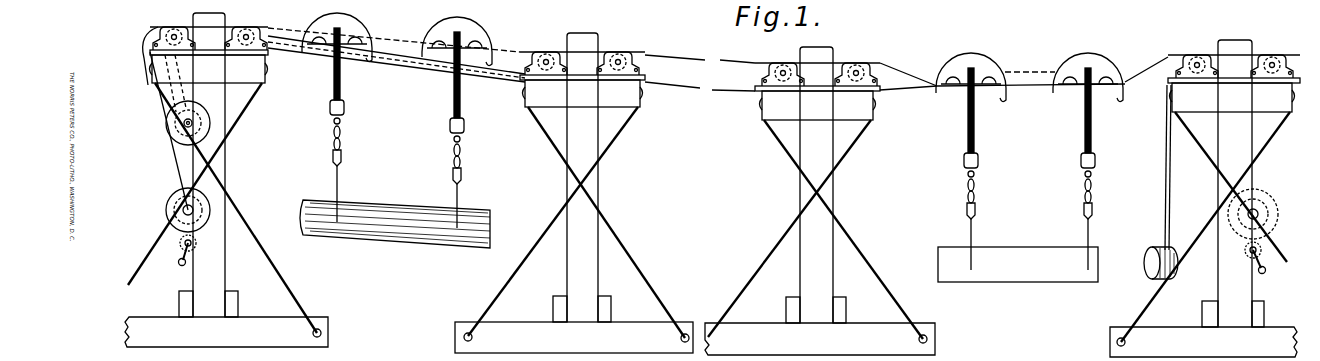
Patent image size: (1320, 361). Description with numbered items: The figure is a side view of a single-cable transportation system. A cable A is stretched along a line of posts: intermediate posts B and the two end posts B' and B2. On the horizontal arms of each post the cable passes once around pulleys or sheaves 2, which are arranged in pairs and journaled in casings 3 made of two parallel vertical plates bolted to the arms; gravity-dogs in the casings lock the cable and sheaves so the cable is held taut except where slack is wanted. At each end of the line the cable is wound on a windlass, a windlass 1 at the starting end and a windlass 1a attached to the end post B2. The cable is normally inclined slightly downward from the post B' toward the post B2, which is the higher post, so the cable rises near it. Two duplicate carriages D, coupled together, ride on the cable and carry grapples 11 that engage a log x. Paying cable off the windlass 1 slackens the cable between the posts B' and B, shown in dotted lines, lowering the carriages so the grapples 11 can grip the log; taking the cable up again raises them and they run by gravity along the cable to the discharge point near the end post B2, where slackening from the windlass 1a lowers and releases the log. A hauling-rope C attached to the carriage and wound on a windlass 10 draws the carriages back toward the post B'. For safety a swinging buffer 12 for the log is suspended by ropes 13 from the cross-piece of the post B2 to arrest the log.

The windlass 1 is at (168, 212).
The windlass 1a is at (1270, 210).
The pulleys or sheaves 2 is at (265, 30).
The casing 3 is at (726, 61).
The windlass 10 is at (167, 140).
The grapples 11 is at (719, 185).
The swinging buffer 12 is at (1150, 252).
The ropes 13 is at (1167, 164).
The cable A is at (400, 36).
The posts B is at (695, 194).
The end post B' is at (226, 180).
The end post B2 is at (1203, 198).
The hauling-rope C is at (908, 92).
The carriage D is at (712, 77).
The log x is at (699, 241).